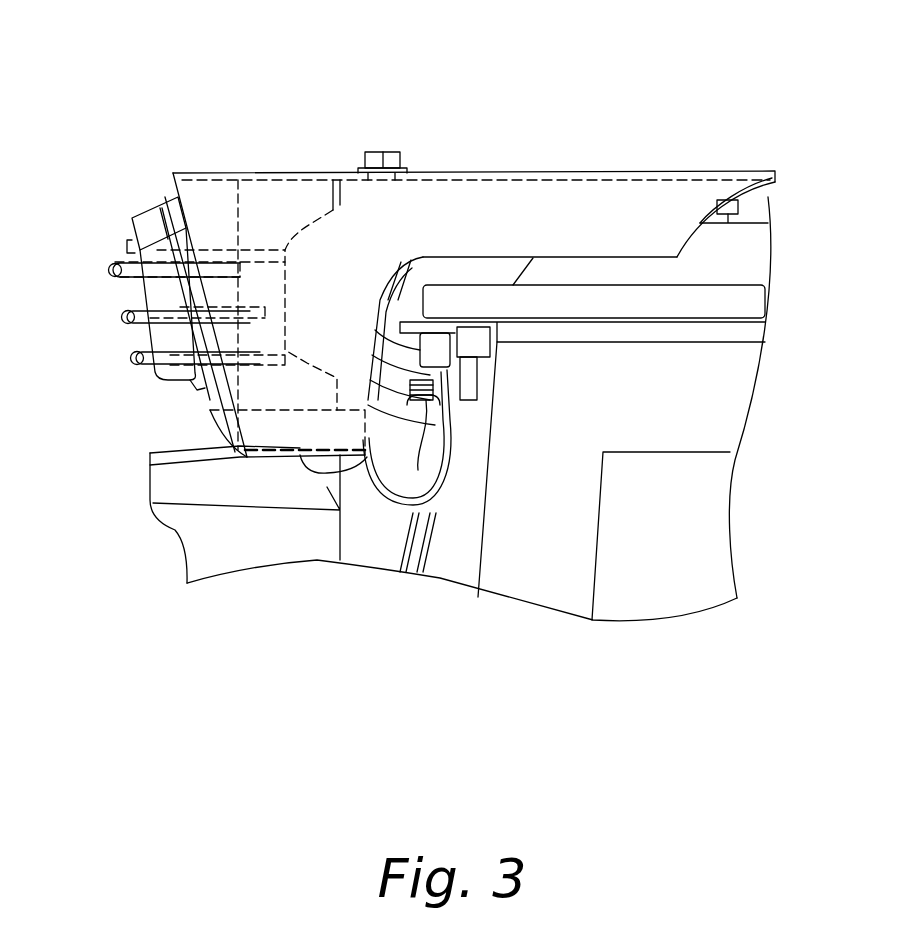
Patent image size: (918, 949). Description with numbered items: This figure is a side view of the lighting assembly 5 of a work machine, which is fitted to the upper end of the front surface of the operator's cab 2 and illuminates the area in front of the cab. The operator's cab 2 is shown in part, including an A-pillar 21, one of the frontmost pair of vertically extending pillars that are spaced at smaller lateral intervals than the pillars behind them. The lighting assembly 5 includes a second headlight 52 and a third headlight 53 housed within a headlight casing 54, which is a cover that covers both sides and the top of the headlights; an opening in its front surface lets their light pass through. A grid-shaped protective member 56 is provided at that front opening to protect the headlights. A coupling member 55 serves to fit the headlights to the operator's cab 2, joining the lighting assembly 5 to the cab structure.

The lighting assembly 5 is at (248, 118).
The third headlight 53 is at (145, 210).
The second headlight 52 is at (177, 330).
The grid-shaped protective member 56 is at (121, 312).
The coupling member 55 is at (403, 291).
The headlight casing 54 is at (437, 207).
The operator's cab 2 is at (778, 433).
The A-pillar 21 is at (533, 585).